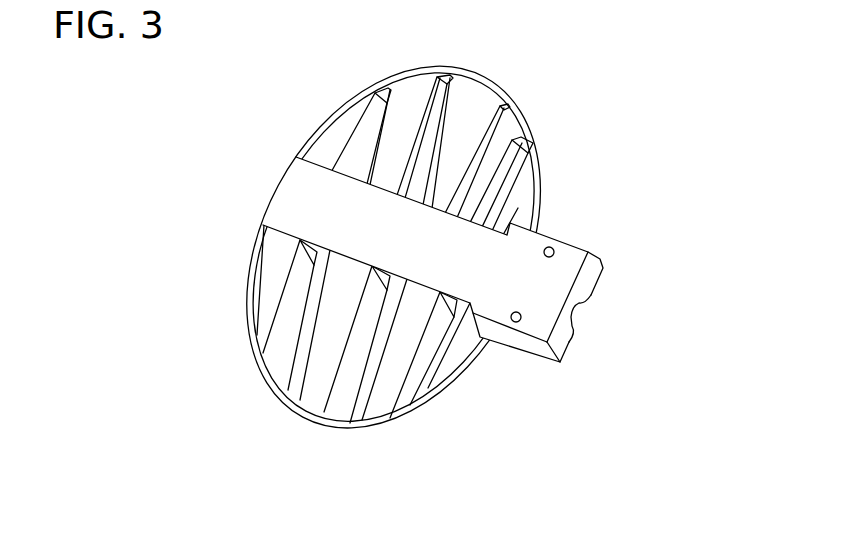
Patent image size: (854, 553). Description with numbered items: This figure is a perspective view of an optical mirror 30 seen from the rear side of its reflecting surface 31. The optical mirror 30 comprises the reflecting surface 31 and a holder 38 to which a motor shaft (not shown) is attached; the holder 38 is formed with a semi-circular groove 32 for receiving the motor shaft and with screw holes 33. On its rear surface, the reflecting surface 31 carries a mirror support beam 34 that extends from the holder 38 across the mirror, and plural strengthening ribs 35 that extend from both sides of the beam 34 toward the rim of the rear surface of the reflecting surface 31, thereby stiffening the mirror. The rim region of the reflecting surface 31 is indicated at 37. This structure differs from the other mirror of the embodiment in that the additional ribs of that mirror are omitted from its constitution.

The optical mirror 30 is at (680, 95).
The reflecting surface 31 is at (529, 118).
The semi-circular groove 32 is at (580, 312).
The screw holes 33 is at (556, 254).
The mirror support beam 34 is at (298, 195).
The strengthening ribs 35 is at (370, 380).
The peripheral rim 37 is at (547, 188).
The holder 38 is at (532, 288).